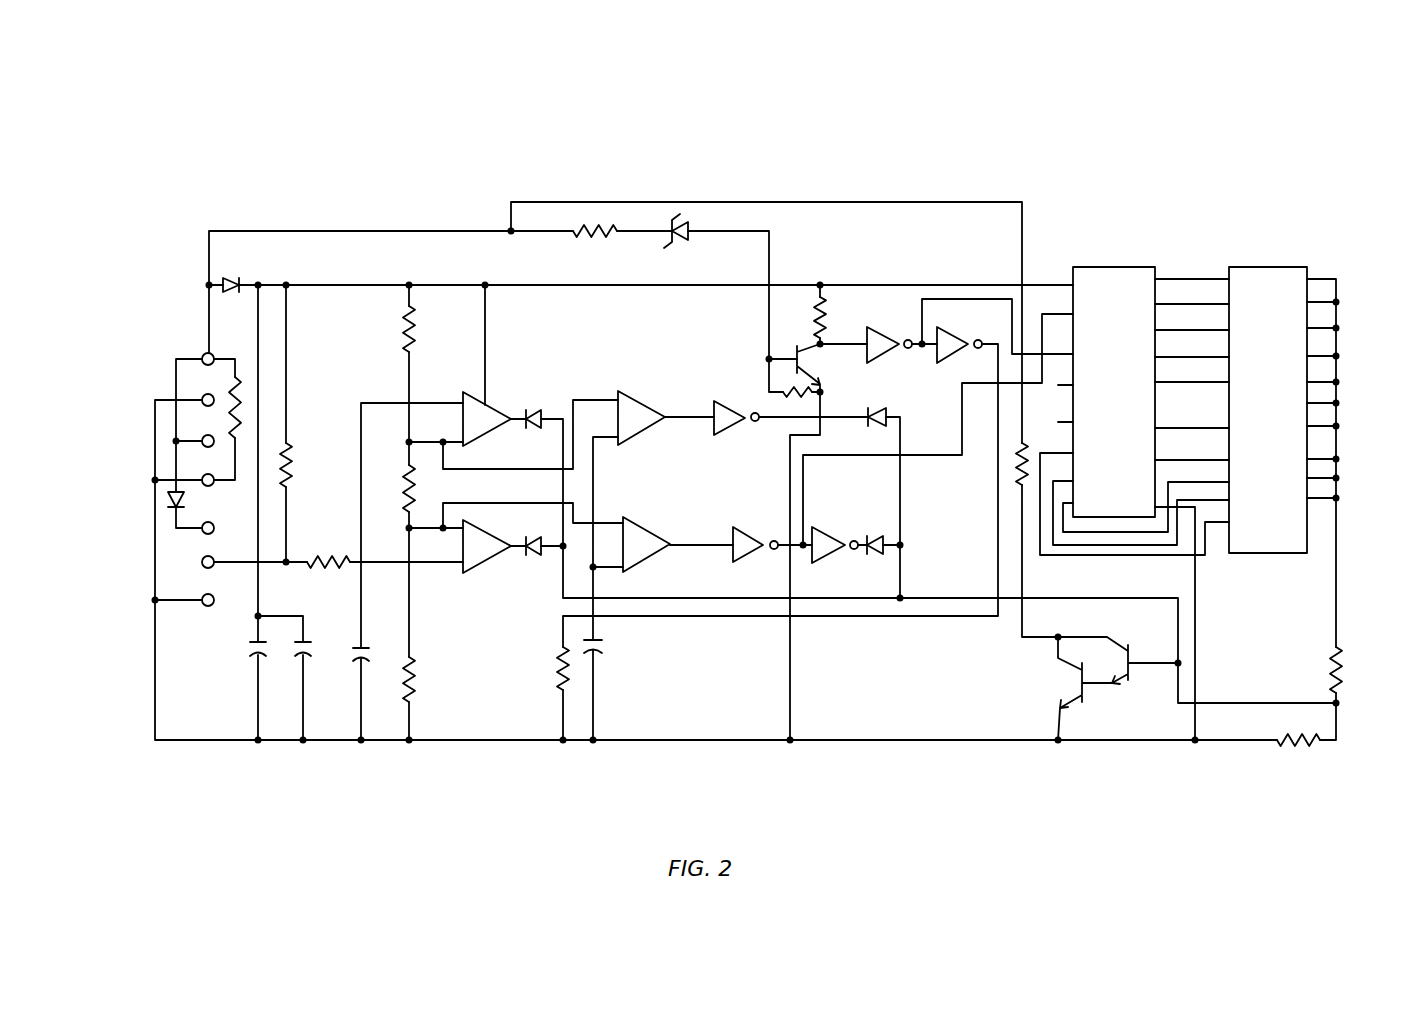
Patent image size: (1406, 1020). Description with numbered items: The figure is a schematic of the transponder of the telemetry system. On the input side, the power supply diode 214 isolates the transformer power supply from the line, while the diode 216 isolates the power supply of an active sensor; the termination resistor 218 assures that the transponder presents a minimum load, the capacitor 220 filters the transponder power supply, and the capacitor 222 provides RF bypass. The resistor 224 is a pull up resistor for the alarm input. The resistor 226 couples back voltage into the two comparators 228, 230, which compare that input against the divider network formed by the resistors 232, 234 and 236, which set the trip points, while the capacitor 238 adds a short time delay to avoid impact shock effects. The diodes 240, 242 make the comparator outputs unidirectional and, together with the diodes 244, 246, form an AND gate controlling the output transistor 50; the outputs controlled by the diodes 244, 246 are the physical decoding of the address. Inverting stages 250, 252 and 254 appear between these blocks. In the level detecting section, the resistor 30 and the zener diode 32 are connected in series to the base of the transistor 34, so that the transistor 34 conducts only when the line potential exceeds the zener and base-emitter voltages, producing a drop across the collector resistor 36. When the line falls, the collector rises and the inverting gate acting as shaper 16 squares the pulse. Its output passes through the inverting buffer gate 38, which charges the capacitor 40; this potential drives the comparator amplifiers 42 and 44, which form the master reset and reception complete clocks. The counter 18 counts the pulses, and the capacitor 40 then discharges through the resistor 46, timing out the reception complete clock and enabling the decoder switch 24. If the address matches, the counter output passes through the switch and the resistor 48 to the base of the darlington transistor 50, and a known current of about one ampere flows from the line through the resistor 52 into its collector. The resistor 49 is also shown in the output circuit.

The power supply diode 214 is at (237, 272).
The diode 216 is at (192, 498).
The termination resistor 218 is at (243, 397).
The filter capacitor 220 is at (245, 650).
The RF bypass capacitor 222 is at (310, 648).
The pull up resistor 224 is at (296, 463).
The resistor 226 is at (322, 552).
The comparator 228 is at (488, 415).
The comparator 230 is at (480, 540).
The resistor 232 is at (403, 325).
The resistor 234 is at (417, 490).
The resistor 236 is at (420, 677).
The capacitor 238 is at (343, 660).
The diode 240 is at (537, 430).
The diode 242 is at (545, 557).
The diode 244 is at (880, 423).
The diode 246 is at (875, 548).
The inverter 250 is at (728, 415).
The inverter 252 is at (748, 535).
The inverter 254 is at (828, 528).
The resistor 30 is at (590, 233).
The zener diode 32 is at (688, 240).
The transistor 34 is at (817, 358).
The collector resistor 36 is at (828, 318).
The inverting buffer gate 38 is at (947, 335).
The shaper 16 is at (883, 347).
The capacitor 40 is at (600, 648).
The comparator amplifier 42 is at (642, 535).
The comparator amplifier 44 is at (635, 405).
The resistor 46 is at (553, 652).
The resistor 48 is at (1328, 665).
The resistor 49 is at (1293, 748).
The darlington transistor 50 is at (1067, 683).
The resistor 52 is at (1012, 462).
The counter 18 is at (1100, 278).
The decoder switch 24 is at (1250, 283).